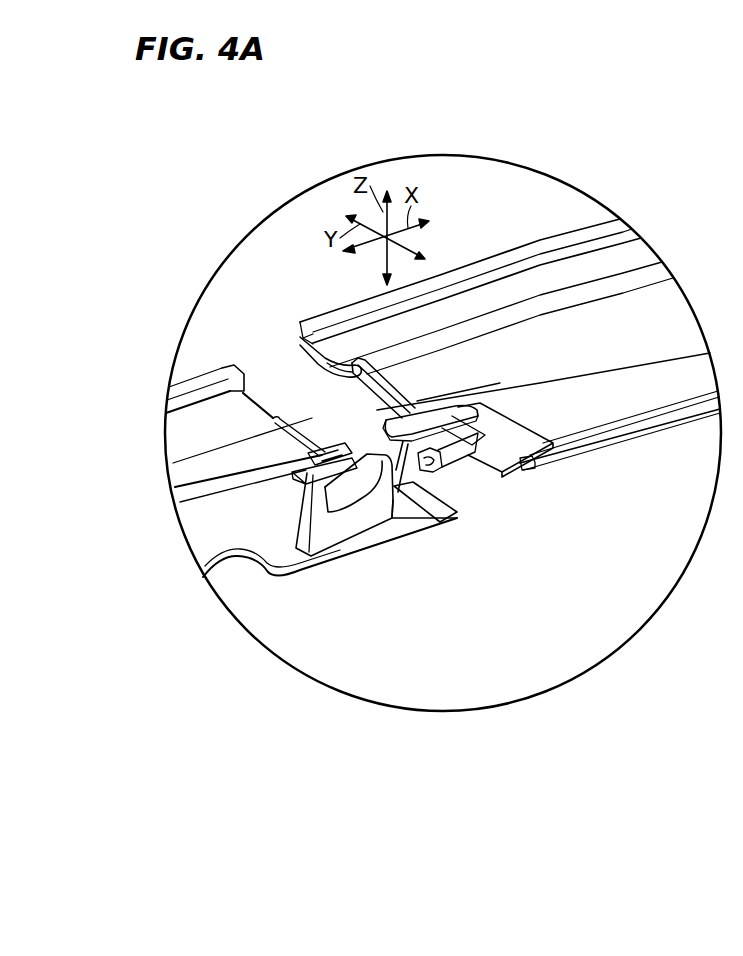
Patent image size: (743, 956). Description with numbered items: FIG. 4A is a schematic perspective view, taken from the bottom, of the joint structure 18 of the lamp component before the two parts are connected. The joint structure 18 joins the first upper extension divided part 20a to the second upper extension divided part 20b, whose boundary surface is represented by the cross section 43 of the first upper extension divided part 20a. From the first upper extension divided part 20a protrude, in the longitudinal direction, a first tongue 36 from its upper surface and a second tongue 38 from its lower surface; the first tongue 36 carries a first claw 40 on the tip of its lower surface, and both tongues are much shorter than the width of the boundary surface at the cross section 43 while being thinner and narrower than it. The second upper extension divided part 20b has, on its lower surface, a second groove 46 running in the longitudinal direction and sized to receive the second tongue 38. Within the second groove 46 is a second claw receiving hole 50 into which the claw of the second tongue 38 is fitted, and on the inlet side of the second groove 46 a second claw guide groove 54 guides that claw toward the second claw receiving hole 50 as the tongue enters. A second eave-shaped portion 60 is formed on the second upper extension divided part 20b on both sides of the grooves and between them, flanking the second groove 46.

The joint structure 18 is at (222, 362).
The first upper extension divided part 20a is at (523, 286).
The second upper extension divided part 20b is at (208, 410).
The first tongue 36 is at (430, 464).
The second tongue 38 is at (432, 470).
The first claw 40 is at (442, 460).
The cross section 43 is at (312, 321).
The second groove 46 is at (310, 448).
The second claw receiving hole 50 is at (275, 415).
The second claw guide groove 54 is at (333, 448).
The second eave-shaped portion 60 is at (378, 448).